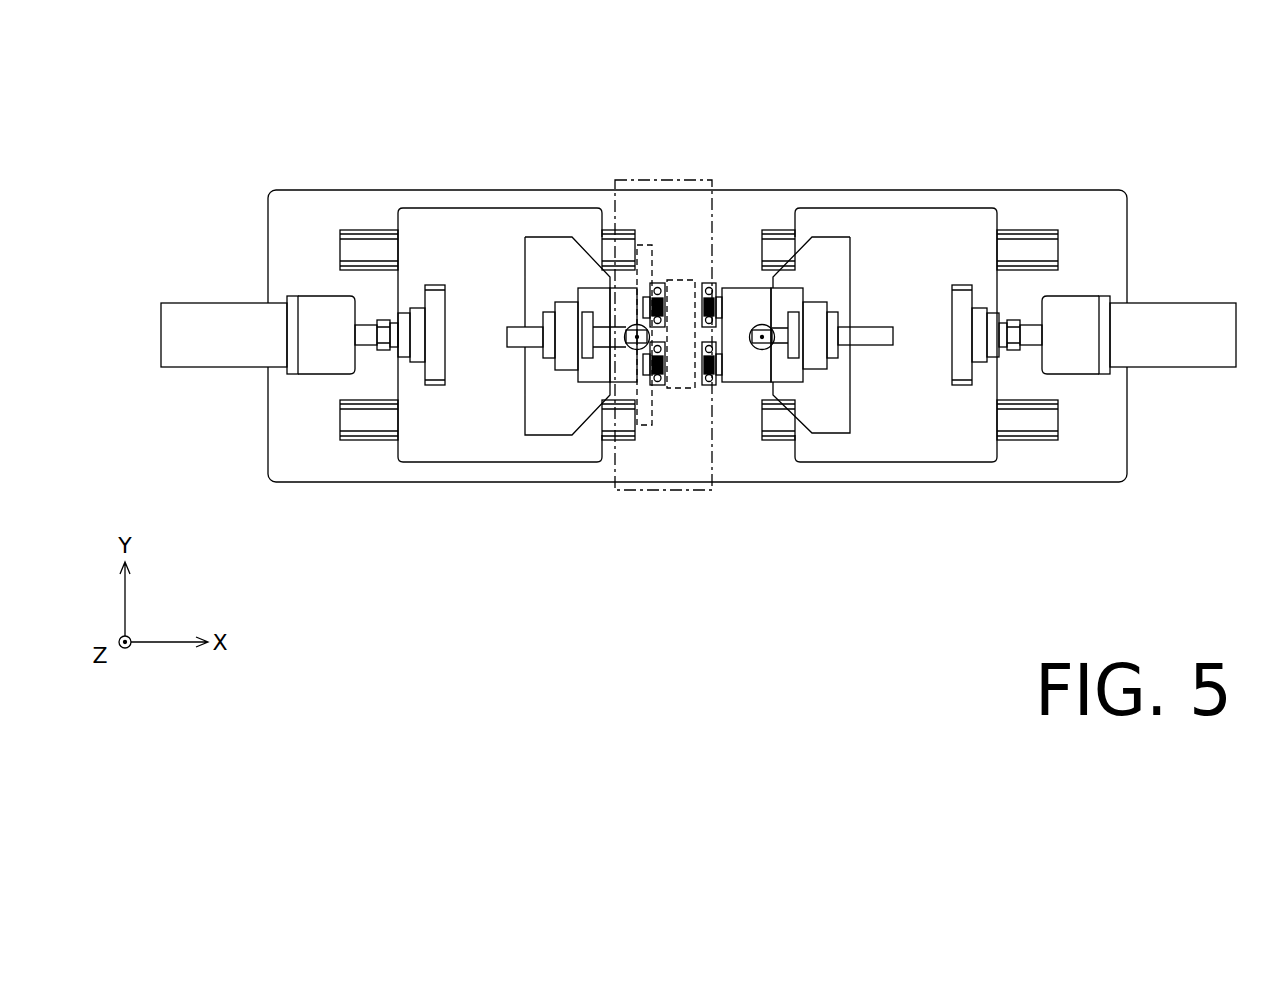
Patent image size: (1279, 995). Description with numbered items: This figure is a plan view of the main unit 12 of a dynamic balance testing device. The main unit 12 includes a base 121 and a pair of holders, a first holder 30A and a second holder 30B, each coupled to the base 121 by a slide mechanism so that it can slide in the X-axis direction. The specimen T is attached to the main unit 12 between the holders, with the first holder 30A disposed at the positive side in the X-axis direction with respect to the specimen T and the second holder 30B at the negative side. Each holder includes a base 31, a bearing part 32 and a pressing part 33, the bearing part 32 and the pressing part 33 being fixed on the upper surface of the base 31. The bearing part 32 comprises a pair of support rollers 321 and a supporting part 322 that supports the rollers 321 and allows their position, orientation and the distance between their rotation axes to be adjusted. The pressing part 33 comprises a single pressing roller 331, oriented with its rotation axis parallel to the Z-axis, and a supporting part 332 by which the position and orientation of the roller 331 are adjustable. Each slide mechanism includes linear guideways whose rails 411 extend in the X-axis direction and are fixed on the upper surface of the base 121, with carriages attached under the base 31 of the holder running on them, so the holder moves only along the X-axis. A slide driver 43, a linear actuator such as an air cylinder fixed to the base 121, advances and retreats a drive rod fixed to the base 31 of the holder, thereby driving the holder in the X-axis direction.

The main unit 12 is at (704, 342).
The base 121 is at (987, 482).
The first holder 30A is at (953, 343).
The second holder 30B is at (478, 205).
The base 31 is at (900, 462).
The bearing part 32 is at (752, 448).
The rollers 321 is at (705, 383).
The supporting part 322 is at (740, 383).
The pressing part 33 is at (802, 228).
The roller 331 is at (760, 322).
The supporting part 332 is at (860, 312).
The rail 411 is at (1058, 417).
The slide driver 43 is at (1190, 303).
The specimen T is at (658, 180).